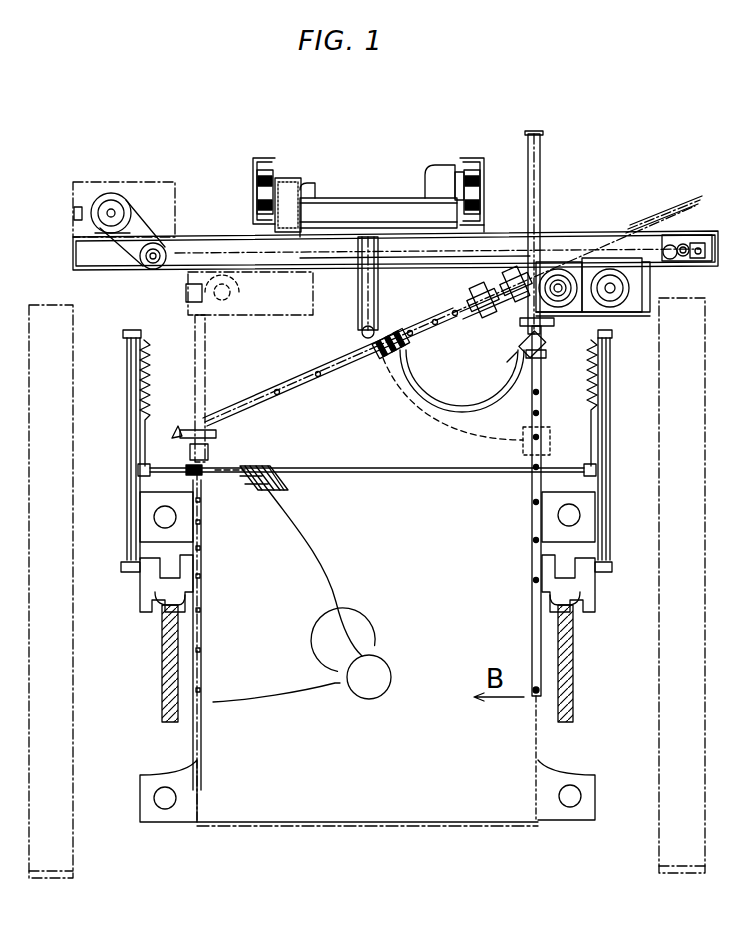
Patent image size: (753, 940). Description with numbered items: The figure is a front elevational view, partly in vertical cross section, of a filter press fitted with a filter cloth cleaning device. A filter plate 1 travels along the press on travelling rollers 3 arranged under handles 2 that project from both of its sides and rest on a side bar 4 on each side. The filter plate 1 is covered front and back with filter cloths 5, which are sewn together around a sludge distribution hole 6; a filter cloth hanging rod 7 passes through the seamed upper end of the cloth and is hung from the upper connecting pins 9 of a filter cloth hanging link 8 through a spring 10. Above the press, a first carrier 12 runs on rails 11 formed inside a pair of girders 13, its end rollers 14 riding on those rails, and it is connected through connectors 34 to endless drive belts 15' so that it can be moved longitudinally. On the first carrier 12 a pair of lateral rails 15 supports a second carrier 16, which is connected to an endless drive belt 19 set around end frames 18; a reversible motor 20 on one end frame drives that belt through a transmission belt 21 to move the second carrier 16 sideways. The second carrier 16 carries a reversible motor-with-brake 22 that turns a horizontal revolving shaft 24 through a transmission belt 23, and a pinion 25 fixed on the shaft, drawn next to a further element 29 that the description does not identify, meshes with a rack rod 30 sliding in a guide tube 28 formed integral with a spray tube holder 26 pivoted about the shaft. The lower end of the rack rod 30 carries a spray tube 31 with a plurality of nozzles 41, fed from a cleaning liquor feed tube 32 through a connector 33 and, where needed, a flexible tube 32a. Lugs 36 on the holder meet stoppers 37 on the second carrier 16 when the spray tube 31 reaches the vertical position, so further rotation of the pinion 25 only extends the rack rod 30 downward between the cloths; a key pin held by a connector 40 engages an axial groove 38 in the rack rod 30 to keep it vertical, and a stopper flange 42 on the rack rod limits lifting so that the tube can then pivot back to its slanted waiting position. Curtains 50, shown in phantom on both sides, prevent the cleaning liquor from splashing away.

The filter plate 1 is at (430, 824).
The handles 2 is at (550, 576).
The travelling rollers 3 is at (582, 594).
The side bar 4 is at (162, 640).
The filter cloths 5 is at (322, 549).
The sludge distribution hole 6 is at (380, 665).
The filter cloth hanging rod 7 is at (155, 465).
The filter cloth hanging link 8 is at (132, 372).
The upper connecting pins 9 is at (138, 332).
The spring 10 is at (149, 366).
The rails 11 is at (257, 207).
The first carrier 12 is at (335, 198).
The girders 13 is at (262, 157).
The end rollers 14 is at (257, 186).
The rails 15 is at (347, 287).
The endless drive belts 15' is at (368, 175).
The second carrier 16 is at (655, 288).
The end frames 18 is at (73, 252).
The endless drive belt 19 is at (278, 280).
The reversible motor 20 is at (110, 195).
The transmission belt 21 is at (155, 242).
The reversible motor-with-brake 22 is at (684, 242).
The transmission belt 23 is at (670, 245).
The horizontal revolving shaft 24 is at (568, 284).
The pinion 25 is at (604, 280).
The spray tube holder 26 is at (494, 283).
The guide tube 28 is at (546, 281).
The pulley 29 is at (554, 280).
The rack rod 30 is at (542, 133).
The spray tube 31 is at (523, 432).
The cleaning liquor feed tube 32 is at (412, 386).
The flexible tube 32a is at (436, 412).
The connector 33 is at (541, 380).
The connectors 34 is at (430, 176).
The lugs 36 is at (520, 320).
The stoppers 37 is at (556, 320).
The groove 38 is at (528, 200).
The connector 40 is at (548, 352).
The nozzles 41 is at (541, 413).
The stopper flange 42 is at (520, 340).
The curtains 50 is at (78, 688).